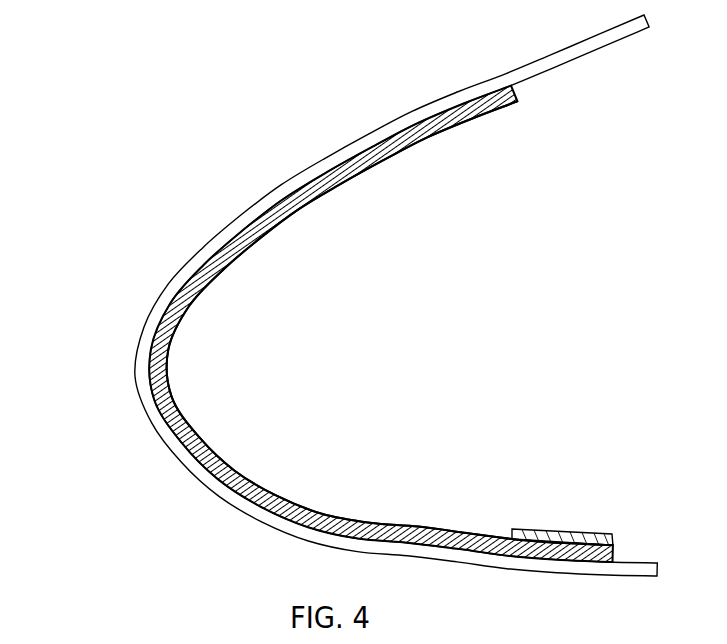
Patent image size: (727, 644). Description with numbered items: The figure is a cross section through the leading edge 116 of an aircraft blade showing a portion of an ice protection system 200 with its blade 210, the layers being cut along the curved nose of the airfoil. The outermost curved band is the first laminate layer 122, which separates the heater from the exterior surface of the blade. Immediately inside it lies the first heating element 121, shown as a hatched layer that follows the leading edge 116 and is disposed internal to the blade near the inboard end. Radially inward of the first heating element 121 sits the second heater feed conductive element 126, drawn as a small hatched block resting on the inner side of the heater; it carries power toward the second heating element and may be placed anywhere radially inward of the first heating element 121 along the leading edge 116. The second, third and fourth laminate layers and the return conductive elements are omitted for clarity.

The ice protection system 200 is at (118, 86).
The blade 210 is at (160, 194).
The leading edge 116 is at (140, 353).
The first laminate layer 122 is at (148, 420).
The first heating element 121 is at (210, 460).
The second heater feed conductive element 126 is at (548, 530).